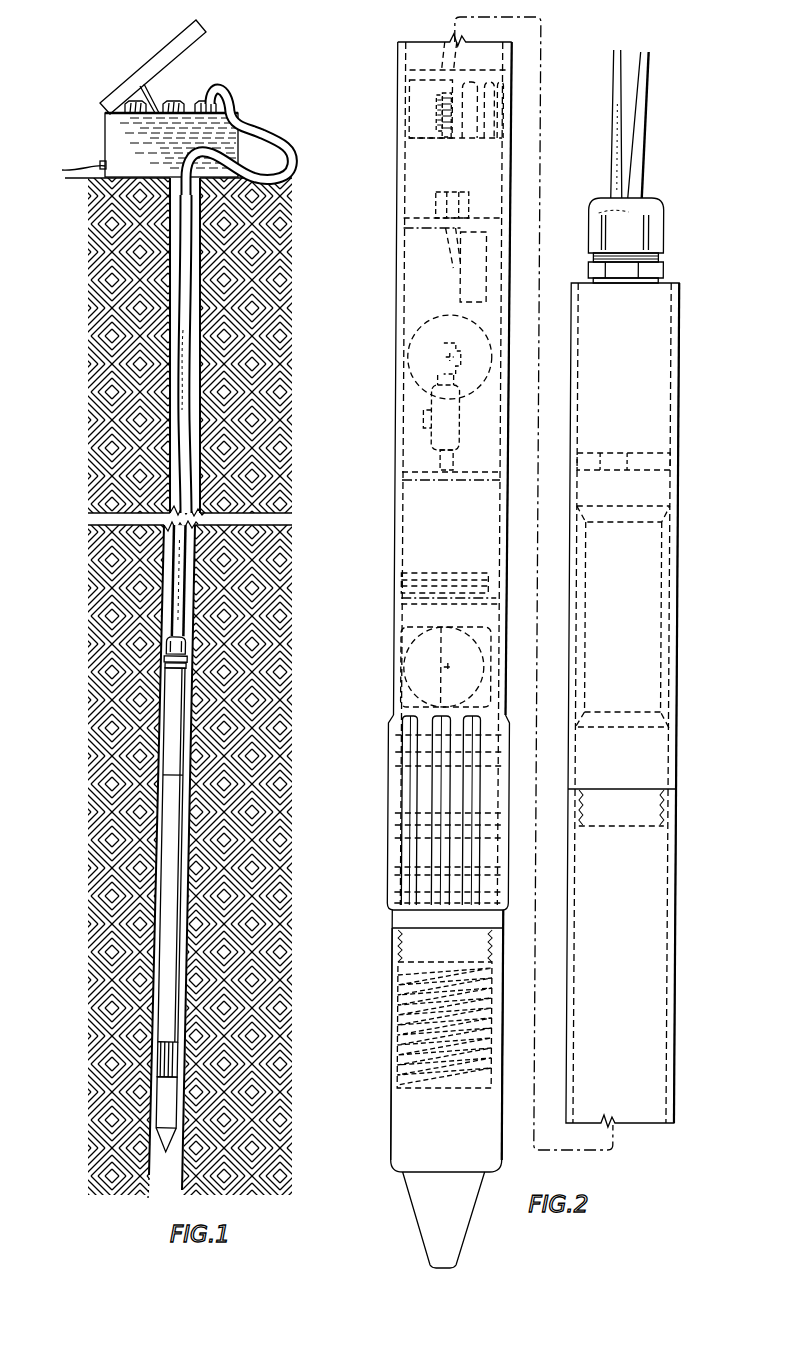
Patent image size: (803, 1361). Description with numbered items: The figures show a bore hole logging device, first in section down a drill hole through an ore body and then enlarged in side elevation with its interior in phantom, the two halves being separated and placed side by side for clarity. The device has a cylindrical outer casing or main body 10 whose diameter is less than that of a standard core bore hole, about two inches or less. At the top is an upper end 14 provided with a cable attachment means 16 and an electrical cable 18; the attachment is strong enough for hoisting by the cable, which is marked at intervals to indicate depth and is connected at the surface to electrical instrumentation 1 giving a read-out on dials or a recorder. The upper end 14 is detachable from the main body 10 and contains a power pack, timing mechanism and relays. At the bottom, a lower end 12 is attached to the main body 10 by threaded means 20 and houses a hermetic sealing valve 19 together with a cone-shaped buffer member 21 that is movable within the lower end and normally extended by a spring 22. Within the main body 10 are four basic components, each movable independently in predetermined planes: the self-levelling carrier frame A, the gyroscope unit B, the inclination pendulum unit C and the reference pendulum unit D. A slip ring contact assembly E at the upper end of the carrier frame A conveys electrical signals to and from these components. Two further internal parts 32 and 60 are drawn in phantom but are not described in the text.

In FIG. 1, the electrical instrumentation 1 is at (160, 108).
In FIG. 1, the main body 10 is at (229, 896).
In FIG. 2, the main body 10 is at (420, 651).
In FIG. 1, the lower end 12 is at (170, 1117).
In FIG. 2, the lower end 12 is at (397, 1090).
In FIG. 1, the upper end 14 is at (175, 695).
In FIG. 2, the upper end 14 is at (678, 463).
In FIG. 1, the cable attachment means 16 is at (187, 648).
In FIG. 2, the cable attachment means 16 is at (662, 232).
In FIG. 1, the electrical cable 18 is at (245, 130).
In FIG. 2, the electrical cable 18 is at (640, 133).
In FIG. 2, the valve 19 is at (410, 988).
In FIG. 2, the threaded means 20 is at (398, 950).
In FIG. 1, the cone-shaped buffer member 21 is at (172, 1140).
In FIG. 2, the cone-shaped buffer member 21 is at (437, 1185).
In FIG. 2, the spring 22 is at (402, 1017).
In FIG. 2, the circuit element 32 is at (450, 256).
In FIG. 2, the sensor element 60 is at (422, 437).
In FIG. 2, the self-levelling carrier frame A is at (538, 261).
In FIG. 2, the gyroscope unit B is at (434, 670).
In FIG. 2, the inclination pendulum unit C is at (428, 350).
In FIG. 2, the reference pendulum unit D is at (426, 580).
In FIG. 2, the slip ring contact assembly E is at (428, 111).